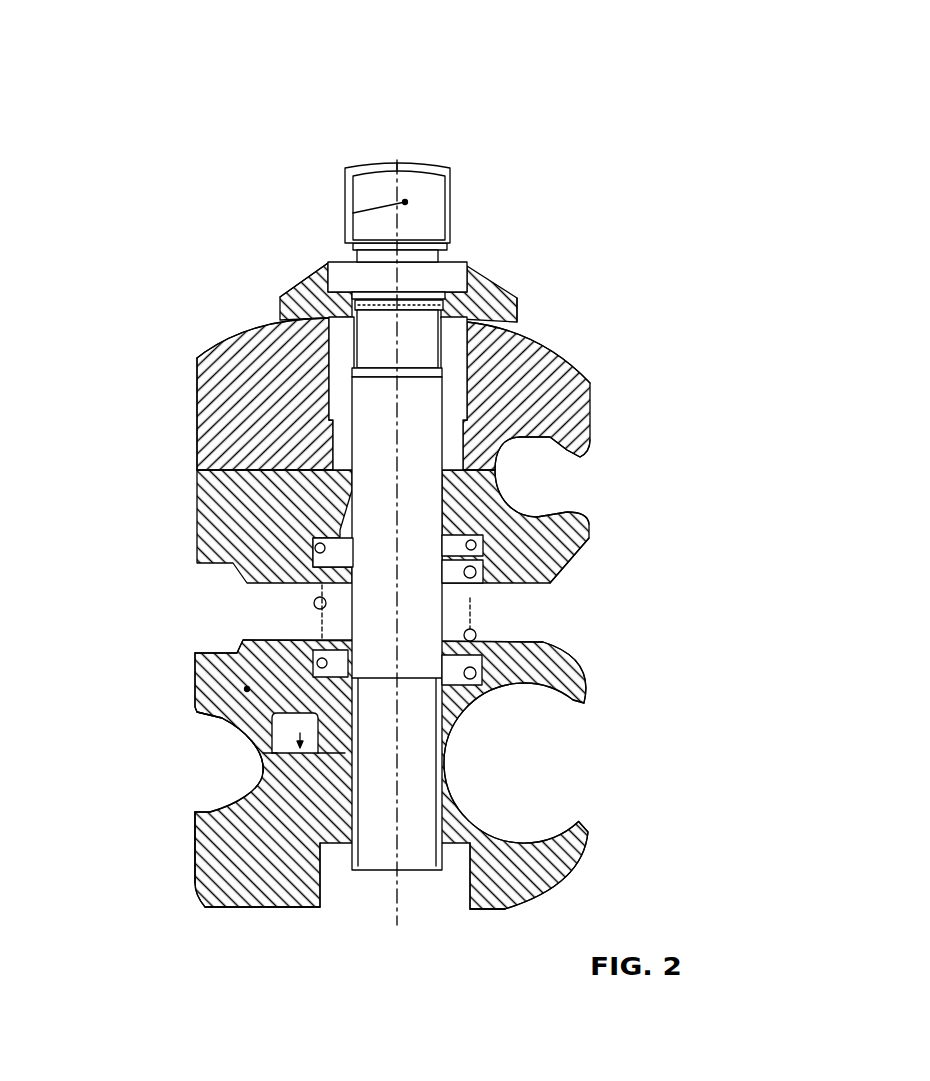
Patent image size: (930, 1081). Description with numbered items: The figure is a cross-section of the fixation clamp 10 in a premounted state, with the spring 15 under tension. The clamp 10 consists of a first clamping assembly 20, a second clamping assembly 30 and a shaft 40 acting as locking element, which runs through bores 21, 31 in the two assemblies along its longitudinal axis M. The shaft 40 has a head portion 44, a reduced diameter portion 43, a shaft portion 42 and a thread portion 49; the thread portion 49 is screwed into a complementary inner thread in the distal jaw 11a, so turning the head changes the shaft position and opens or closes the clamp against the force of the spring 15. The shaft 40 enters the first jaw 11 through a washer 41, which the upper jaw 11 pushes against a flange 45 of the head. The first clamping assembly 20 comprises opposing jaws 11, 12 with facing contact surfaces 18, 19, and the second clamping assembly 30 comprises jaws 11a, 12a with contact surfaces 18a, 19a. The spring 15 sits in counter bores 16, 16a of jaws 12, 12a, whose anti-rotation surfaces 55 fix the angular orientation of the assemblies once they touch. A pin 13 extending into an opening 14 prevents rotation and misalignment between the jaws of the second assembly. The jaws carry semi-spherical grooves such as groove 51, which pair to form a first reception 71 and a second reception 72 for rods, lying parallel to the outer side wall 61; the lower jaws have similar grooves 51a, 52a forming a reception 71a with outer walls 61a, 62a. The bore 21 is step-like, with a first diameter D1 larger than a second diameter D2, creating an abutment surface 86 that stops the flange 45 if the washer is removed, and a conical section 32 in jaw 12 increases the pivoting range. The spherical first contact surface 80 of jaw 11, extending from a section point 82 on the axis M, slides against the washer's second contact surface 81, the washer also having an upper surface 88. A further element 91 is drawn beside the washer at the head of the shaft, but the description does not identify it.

The fixation clamp 10 is at (548, 92).
The first jaw 11 is at (520, 432).
The distal jaw 11a is at (577, 828).
The jaw 12 is at (572, 513).
The jaw 12a is at (578, 702).
The pin 13 is at (267, 773).
The opening 14 is at (247, 689).
The spring 15 is at (312, 603).
The counter bore 16 is at (315, 572).
The counter bore 16a is at (528, 668).
The contact surface 18 is at (200, 470).
The contact surface 18a is at (275, 747).
The contact surface 19 is at (286, 452).
The contact surface 19a is at (198, 730).
The first clamping assembly 20 is at (594, 400).
The bore 21 is at (342, 369).
The second clamping assembly 30 is at (592, 670).
The bore 31 is at (275, 718).
The conical section 32 is at (313, 540).
The shaft 40 is at (455, 208).
The washer 41 is at (518, 305).
The shaft portion 42 is at (335, 497).
The reduced diameter portion 43 is at (198, 352).
The head portion 44 is at (452, 173).
The flange 45 is at (467, 265).
The thread portion 49 is at (273, 783).
The groove 51 is at (550, 360).
The groove 51a is at (530, 838).
The groove 52a is at (223, 843).
The anti-rotation surfaces 55 is at (478, 600).
The outer side wall 61 is at (580, 455).
The outer wall 61a is at (587, 525).
The outer wall 62a is at (193, 850).
The first reception 71 is at (527, 470).
The reception 71a is at (530, 763).
The second reception 72 is at (235, 760).
The first contact surface 80 is at (240, 335).
The second contact surface 81 is at (282, 296).
The section point 82 is at (398, 313).
The abutment surface 86 is at (330, 397).
The upper surface 88 is at (330, 268).
The retaining block 91 is at (485, 292).
The first diameter D1 is at (530, 327).
The second diameter D2 is at (330, 425).
The longitudinal axis M is at (397, 163).